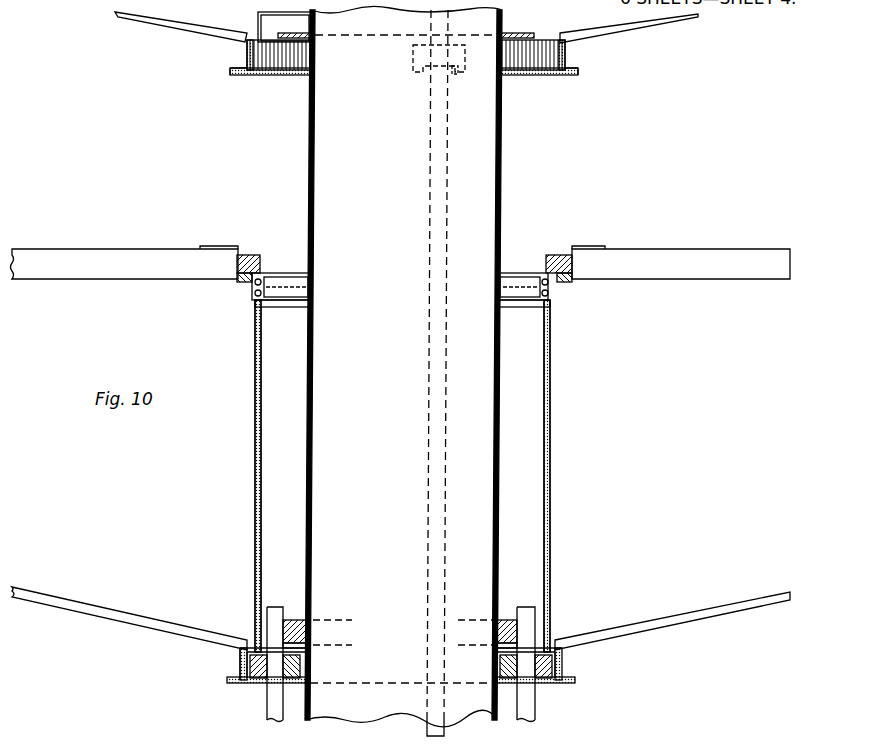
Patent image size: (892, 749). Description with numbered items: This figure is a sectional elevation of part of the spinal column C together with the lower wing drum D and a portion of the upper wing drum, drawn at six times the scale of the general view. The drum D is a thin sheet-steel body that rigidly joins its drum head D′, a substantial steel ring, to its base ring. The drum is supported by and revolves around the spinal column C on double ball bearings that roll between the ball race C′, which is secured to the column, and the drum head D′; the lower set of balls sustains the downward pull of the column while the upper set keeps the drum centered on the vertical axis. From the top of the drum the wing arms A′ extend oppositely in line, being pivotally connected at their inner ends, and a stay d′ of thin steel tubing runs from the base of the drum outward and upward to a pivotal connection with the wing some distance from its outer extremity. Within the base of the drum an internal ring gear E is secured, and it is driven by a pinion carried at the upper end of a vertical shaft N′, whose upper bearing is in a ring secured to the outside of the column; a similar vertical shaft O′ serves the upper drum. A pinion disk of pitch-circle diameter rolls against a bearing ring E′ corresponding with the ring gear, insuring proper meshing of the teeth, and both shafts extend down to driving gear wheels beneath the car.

The spinal column C is at (403, 366).
The ball race C′ is at (282, 277).
The drum D is at (402, 332).
The drum head D′ is at (555, 292).
The internal ring gear E is at (293, 70).
The bearing ring E′ is at (565, 75).
The wing arm A′ is at (61, 270).
The hatched block a is at (252, 250).
The stay d′ is at (650, 24).
The vertical shaft N′ is at (275, 712).
The vertical shaft O′ is at (431, 729).